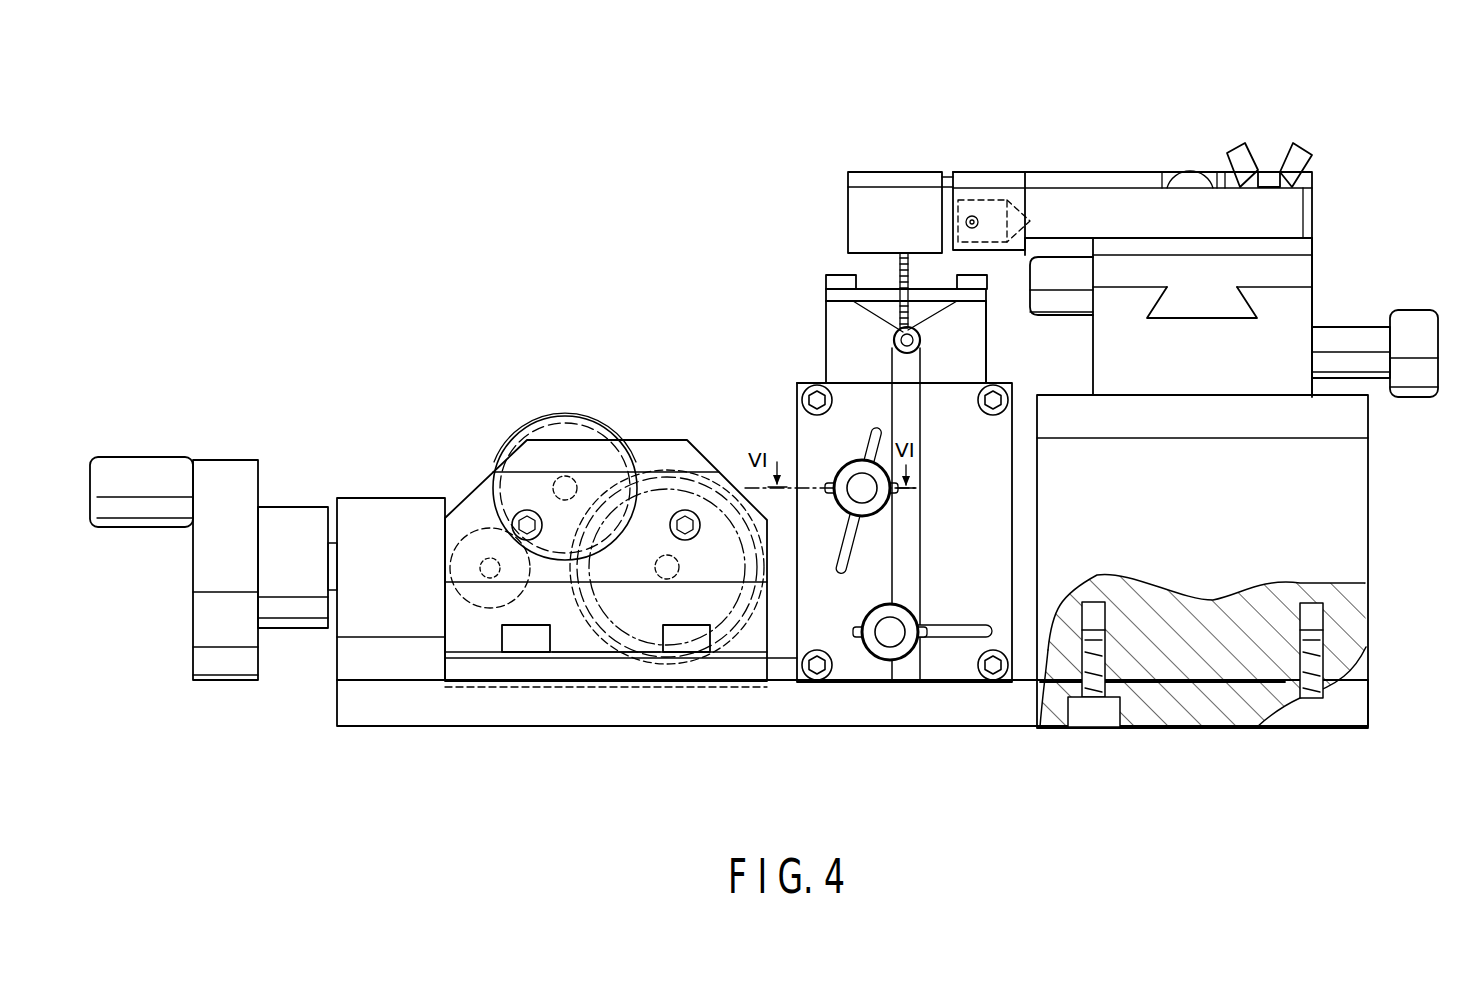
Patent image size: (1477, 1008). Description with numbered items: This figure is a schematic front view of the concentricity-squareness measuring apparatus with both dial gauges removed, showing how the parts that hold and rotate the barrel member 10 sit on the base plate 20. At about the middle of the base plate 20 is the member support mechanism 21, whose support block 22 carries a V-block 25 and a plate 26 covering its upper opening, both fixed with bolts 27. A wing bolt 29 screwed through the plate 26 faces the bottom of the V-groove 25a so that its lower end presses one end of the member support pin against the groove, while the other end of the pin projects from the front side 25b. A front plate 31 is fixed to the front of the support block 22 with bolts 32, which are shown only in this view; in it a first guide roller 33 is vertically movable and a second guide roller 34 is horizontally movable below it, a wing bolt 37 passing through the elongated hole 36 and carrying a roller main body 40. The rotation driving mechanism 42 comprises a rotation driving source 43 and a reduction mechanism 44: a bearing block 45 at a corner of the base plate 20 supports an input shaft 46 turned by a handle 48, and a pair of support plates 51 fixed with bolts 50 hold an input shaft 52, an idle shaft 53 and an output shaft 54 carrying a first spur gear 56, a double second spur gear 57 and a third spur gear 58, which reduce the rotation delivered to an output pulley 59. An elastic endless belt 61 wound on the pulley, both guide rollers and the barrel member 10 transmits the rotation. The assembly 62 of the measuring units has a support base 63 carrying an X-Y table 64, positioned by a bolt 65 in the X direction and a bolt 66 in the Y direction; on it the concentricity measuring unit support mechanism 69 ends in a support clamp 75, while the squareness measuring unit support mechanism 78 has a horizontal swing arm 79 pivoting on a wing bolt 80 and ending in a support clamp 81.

The barrel member 10 is at (893, 345).
The base plate 20 is at (883, 727).
The member support mechanism 21 is at (808, 312).
The support block 22 is at (797, 388).
The V-block 25 is at (826, 340).
The V-groove 25a is at (930, 313).
The front side 25b is at (972, 365).
The plate 26 is at (943, 288).
The bolts 27 is at (838, 282).
The wing bolt 29 is at (900, 278).
The front plate 31 is at (797, 462).
The bolts 32 is at (813, 387).
The first guide roller 33 is at (900, 505).
The second guide roller 34 is at (918, 658).
The elongated hole 36 is at (948, 620).
The wing bolt 37 is at (885, 645).
The roller main body 40 is at (895, 493).
The rotation driving mechanism 42 is at (422, 393).
The rotation driving source 43 is at (318, 470).
The reduction mechanism 44 is at (490, 457).
The bearing block 45 is at (372, 512).
The input shaft 46 is at (330, 560).
The handle 48 is at (228, 460).
The bolts 50 is at (525, 655).
The support plates 51 is at (578, 653).
The input shaft 52 is at (470, 545).
The idle shaft 53 is at (563, 478).
The output shaft 54 is at (665, 555).
The first spur gear 56 is at (500, 525).
The second spur gear 57 is at (567, 417).
The third spur gear 58 is at (728, 643).
The output pulley 59 is at (747, 627).
The elastic endless belt 61 is at (753, 493).
The assembly of concentricity measuring unit and squareness measuring unit 62 is at (1270, 118).
The support base 63 is at (1345, 482).
The X-Y table 64 is at (1322, 297).
The bolt 65 is at (1435, 310).
The bolt 66 is at (1068, 300).
The concentricity measuring unit support mechanism 69 is at (1042, 170).
The support clamp 75 is at (873, 190).
The squareness measuring unit support mechanism 78 is at (1280, 218).
The horizontal swing arm 79 is at (1083, 200).
The wing bolt 80 is at (1293, 150).
The support clamp 81 is at (912, 200).